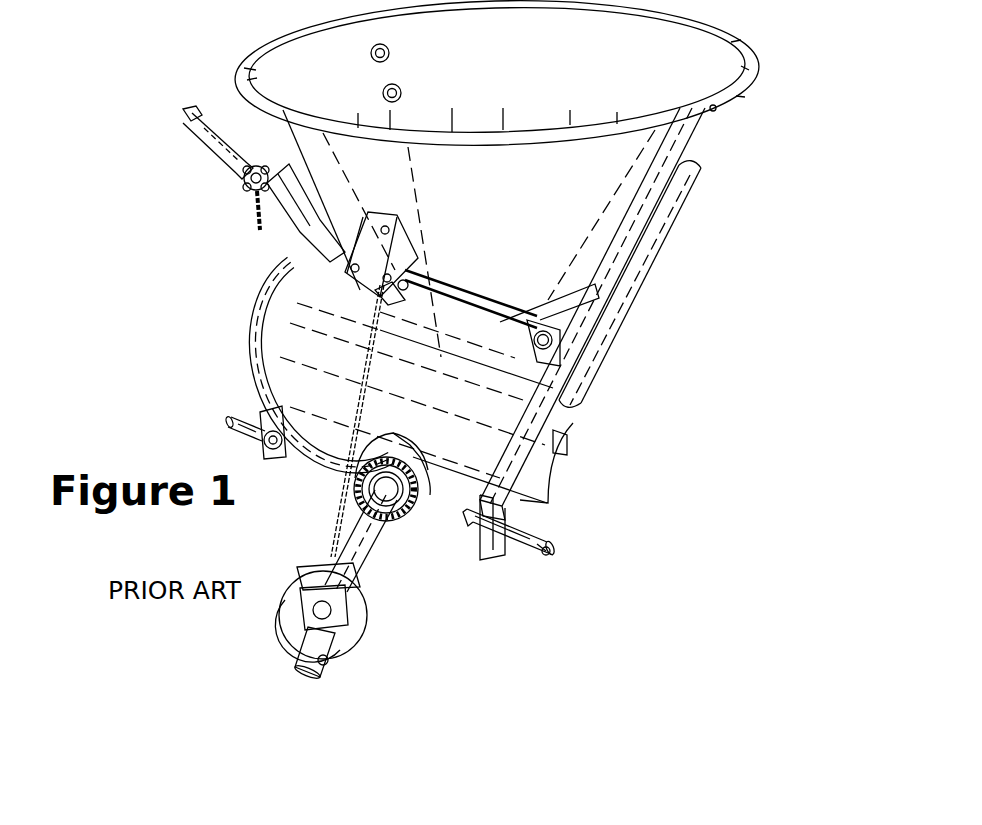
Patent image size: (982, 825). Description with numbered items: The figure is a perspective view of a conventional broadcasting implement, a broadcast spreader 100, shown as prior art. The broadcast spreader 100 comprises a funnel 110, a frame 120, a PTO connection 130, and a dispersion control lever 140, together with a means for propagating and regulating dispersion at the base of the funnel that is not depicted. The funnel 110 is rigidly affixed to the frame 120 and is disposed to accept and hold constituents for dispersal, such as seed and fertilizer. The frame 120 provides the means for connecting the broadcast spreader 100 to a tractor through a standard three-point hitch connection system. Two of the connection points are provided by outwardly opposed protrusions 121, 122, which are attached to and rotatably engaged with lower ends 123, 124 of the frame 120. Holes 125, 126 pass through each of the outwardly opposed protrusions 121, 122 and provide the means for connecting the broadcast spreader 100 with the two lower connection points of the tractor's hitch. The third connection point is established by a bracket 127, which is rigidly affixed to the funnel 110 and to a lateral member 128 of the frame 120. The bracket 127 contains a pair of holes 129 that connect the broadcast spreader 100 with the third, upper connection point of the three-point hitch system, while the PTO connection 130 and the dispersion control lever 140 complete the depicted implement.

The broadcast spreader 100 is at (463, 390).
The funnel 110 is at (705, 63).
The frame 120 is at (647, 250).
The outwardly opposed protrusion 121 is at (230, 420).
The outwardly opposed protrusion 122 is at (547, 548).
The lower end of the frame 123 is at (270, 380).
The lower end of the frame 124 is at (510, 485).
The hole 125 is at (227, 425).
The hole 126 is at (548, 553).
The bracket 127 is at (375, 248).
The lateral member 128 is at (500, 322).
The pair of holes 129 is at (393, 282).
The PTO connection 130 is at (350, 623).
The dispersion control lever 140 is at (210, 137).